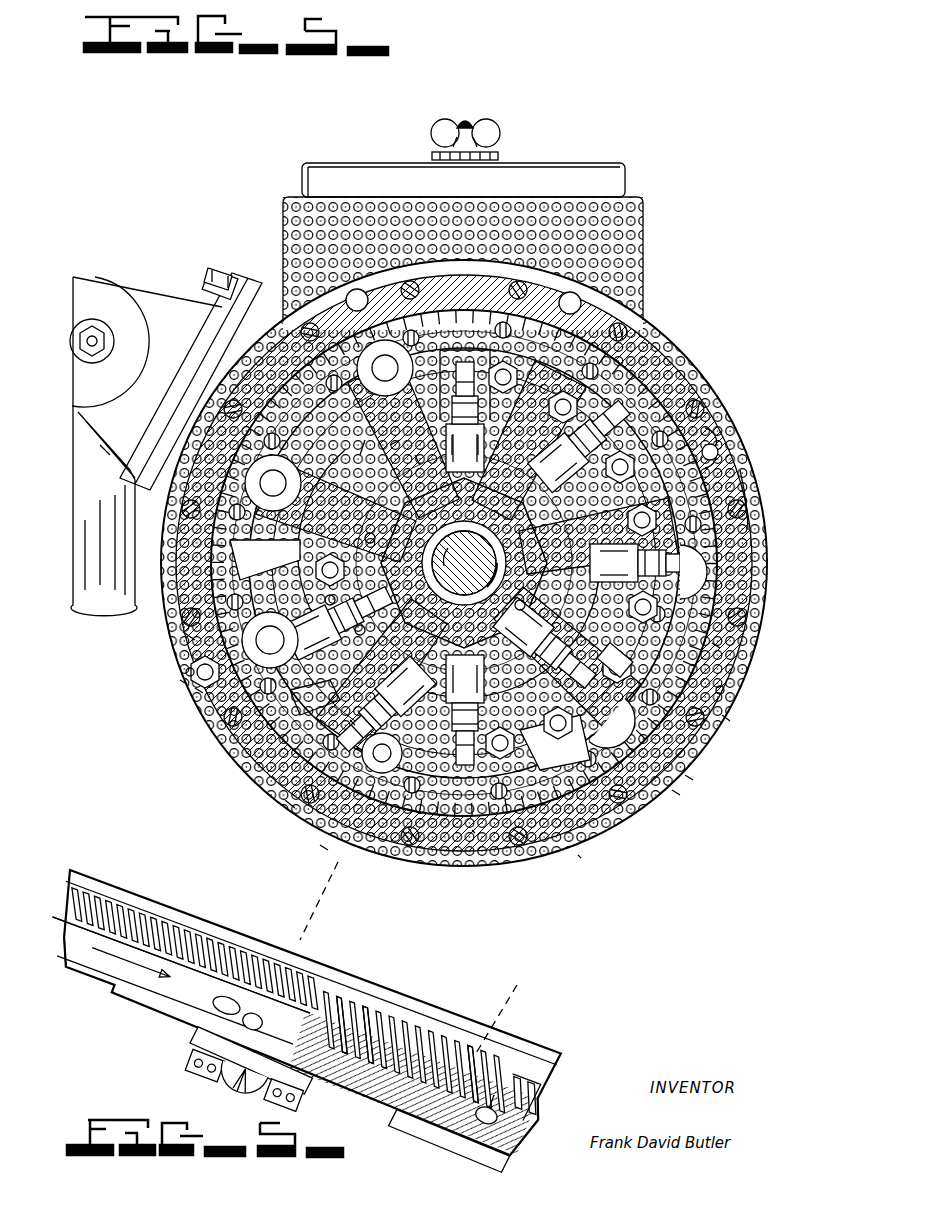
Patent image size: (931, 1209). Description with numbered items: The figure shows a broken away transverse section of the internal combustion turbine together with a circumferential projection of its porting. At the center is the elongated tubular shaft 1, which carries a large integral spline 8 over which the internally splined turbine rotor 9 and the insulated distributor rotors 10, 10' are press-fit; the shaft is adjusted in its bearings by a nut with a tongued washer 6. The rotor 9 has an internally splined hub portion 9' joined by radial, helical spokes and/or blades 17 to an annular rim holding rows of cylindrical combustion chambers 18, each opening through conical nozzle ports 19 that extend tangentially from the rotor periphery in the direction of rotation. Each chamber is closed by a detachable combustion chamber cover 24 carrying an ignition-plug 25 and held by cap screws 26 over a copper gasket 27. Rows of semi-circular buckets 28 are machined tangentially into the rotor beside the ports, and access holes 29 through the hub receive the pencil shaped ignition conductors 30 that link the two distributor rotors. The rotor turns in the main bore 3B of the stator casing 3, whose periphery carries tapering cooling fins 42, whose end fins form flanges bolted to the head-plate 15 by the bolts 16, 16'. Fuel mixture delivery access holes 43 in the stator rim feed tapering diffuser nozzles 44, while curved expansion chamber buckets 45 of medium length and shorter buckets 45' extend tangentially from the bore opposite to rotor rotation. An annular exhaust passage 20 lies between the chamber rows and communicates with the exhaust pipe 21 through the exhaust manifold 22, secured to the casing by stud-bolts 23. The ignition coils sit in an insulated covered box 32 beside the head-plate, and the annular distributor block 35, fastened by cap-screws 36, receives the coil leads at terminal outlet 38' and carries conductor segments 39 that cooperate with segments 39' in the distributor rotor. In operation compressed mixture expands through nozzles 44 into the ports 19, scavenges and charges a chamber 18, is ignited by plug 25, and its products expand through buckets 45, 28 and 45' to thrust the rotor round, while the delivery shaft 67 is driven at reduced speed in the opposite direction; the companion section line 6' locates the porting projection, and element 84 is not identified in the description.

In FIG. 5, the tubular shaft 1 is at (500, 89).
In FIG. 5, the stator casing 3 is at (735, 470).
In FIG. 6, the stator casing 3 is at (480, 1055).
In FIG. 5, the main bore 3B is at (720, 436).
In FIG. 5, the tongued washer 6 is at (351, 817).
In FIG. 5, the bolt 6' is at (360, 787).
In FIG. 5, the integral spline 8 is at (540, 585).
In FIG. 5, the turbine rotor 9 is at (509, 563).
In FIG. 6, the turbine rotor 9 is at (175, 1000).
In FIG. 5, the hub portion 9' is at (362, 546).
In FIG. 5, the distributor rotor 10 is at (458, 563).
In FIG. 5, the distributor rotor 10' is at (477, 413).
In FIG. 5, the head-plate 15 is at (352, 463).
In FIG. 5, the bolts 16 is at (455, 583).
In FIG. 5, the bolts 16' is at (723, 397).
In FIG. 5, the spokes and/or blades 17 is at (430, 505).
In FIG. 5, the combustion chambers 18 is at (340, 425).
In FIG. 5, the nozzle ports 19 is at (720, 598).
In FIG. 6, the nozzle ports 19 is at (215, 1005).
In FIG. 6, the exhaust passage 20 is at (405, 990).
In FIG. 5, the exhaust pipe 21 is at (82, 608).
In FIG. 5, the exhaust manifold 22 is at (148, 300).
In FIG. 5, the stud-bolts 23 is at (207, 283).
In FIG. 5, the combustion chamber cover 24 is at (640, 627).
In FIG. 6, the combustion chamber cover 24 is at (205, 1036).
In FIG. 5, the ignition-plug 25 is at (572, 660).
In FIG. 5, the cap screws 26 is at (268, 580).
In FIG. 6, the cap screws 26 is at (200, 1056).
In FIG. 6, the copper gasket 27 is at (310, 1075).
In FIG. 5, the buckets 28 is at (305, 718).
In FIG. 6, the buckets 28 is at (207, 930).
In FIG. 5, the access holes 29 is at (325, 594).
In FIG. 5, the ignition conductors 30 is at (406, 471).
In FIG. 5, the covered box 32 is at (612, 180).
In FIG. 5, the distributor block 35 is at (370, 635).
In FIG. 5, the cap-screws 36 is at (316, 571).
In FIG. 5, the terminal outlet 38' is at (378, 456).
In FIG. 5, the conductor segments 39 is at (319, 599).
In FIG. 5, the segments 39' is at (479, 417).
In FIG. 5, the cooling fins 42 is at (752, 490).
In FIG. 5, the access holes 43 is at (186, 672).
In FIG. 5, the diffuser nozzles 44 is at (198, 690).
In FIG. 6, the diffuser nozzles 44 is at (485, 1070).
In FIG. 5, the expansion chamber buckets 45 is at (481, 807).
In FIG. 6, the expansion chamber buckets 45 is at (290, 1042).
In FIG. 5, the expansion chamber buckets 45' is at (513, 816).
In FIG. 6, the expansion chamber buckets 45' is at (340, 993).
In FIG. 5, the delivery shaft 67 is at (500, 540).
In FIG. 5, the perforated cover 84 is at (643, 230).